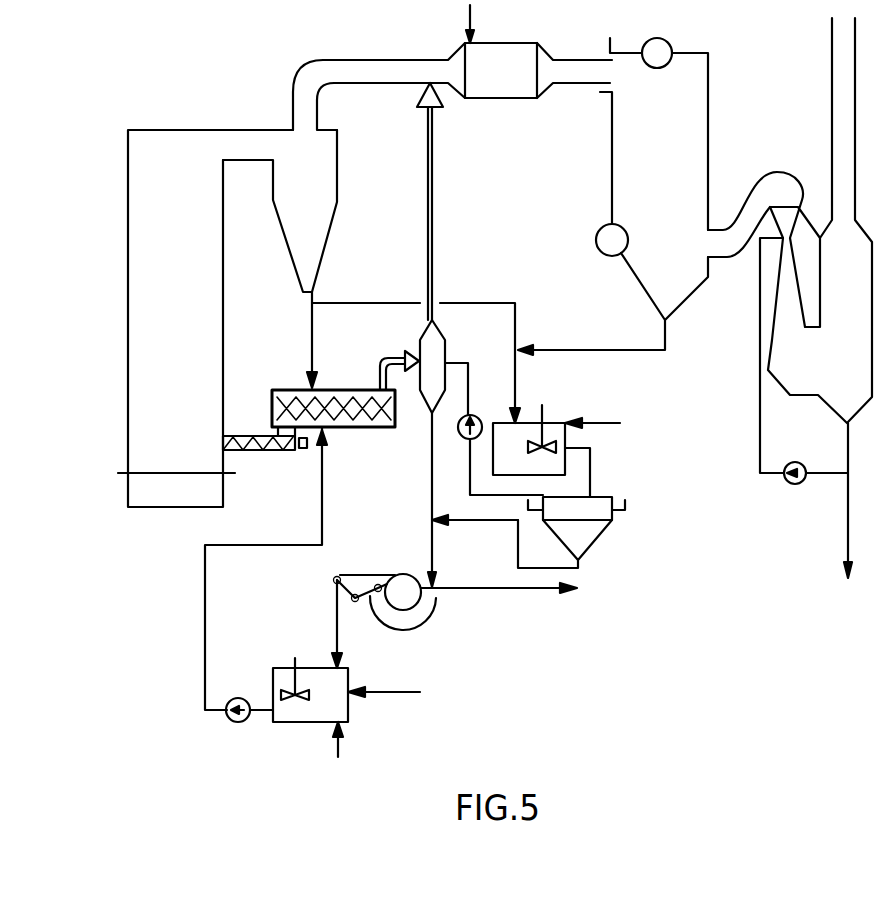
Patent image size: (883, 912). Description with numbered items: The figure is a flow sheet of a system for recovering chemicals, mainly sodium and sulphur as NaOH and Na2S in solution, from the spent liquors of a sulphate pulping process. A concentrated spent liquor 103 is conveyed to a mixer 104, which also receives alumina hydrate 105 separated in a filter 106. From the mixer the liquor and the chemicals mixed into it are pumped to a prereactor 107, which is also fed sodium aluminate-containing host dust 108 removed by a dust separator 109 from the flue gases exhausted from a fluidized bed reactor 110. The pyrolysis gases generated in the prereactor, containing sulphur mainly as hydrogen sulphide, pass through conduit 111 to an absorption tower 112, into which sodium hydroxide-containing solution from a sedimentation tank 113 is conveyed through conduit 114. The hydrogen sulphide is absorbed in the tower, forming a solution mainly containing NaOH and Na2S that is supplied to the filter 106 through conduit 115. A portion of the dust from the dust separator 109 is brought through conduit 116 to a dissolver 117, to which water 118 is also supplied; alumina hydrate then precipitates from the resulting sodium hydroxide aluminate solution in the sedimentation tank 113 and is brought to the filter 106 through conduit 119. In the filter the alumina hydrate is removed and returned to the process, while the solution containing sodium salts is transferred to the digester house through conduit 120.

The concentrated spent liquor 103 is at (407, 687).
The mixer 104 is at (342, 703).
The alumina hydrate 105 is at (333, 625).
The filter 106 is at (407, 603).
The prereactor 107 is at (360, 428).
The sodium aluminate-containing host dust 108 is at (303, 328).
The dust separator 109 is at (310, 228).
The fluidized bed reactor 110 is at (148, 265).
The conduit 111 is at (382, 358).
The absorption tower 112 is at (445, 342).
The sedimentation tank 113 is at (590, 535).
The conduit 114 is at (470, 443).
The conduit 115 is at (432, 500).
The conduit 116 is at (493, 300).
The dissolver 117 is at (555, 435).
The water 118 is at (600, 423).
The conduit 119 is at (478, 523).
The conduit 120 is at (537, 590).